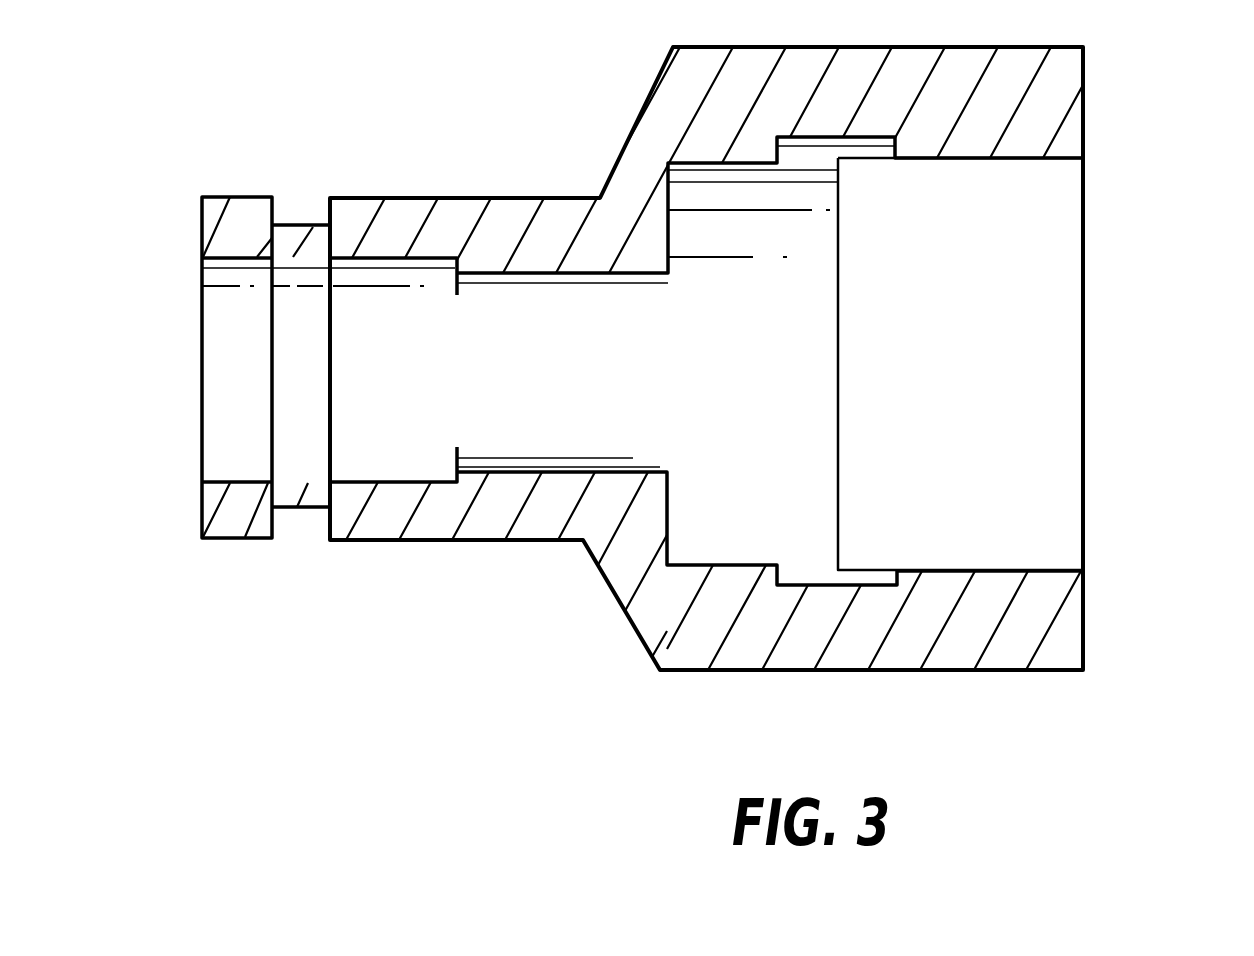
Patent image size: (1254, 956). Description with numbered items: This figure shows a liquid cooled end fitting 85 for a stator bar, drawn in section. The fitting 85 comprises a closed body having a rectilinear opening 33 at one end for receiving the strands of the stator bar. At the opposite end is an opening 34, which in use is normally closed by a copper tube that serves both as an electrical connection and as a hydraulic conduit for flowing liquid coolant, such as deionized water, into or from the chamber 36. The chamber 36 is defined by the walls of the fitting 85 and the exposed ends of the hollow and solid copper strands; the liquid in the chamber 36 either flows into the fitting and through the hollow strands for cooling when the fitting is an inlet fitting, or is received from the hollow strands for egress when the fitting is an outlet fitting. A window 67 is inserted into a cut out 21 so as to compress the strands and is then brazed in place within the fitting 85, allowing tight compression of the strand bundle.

The cut out 21 is at (1010, 158).
The fitting 85 is at (677, 83).
The rectilinear opening 33 is at (1057, 570).
The window 67 is at (1040, 418).
The opening 34 is at (420, 473).
The chamber 36 is at (750, 331).